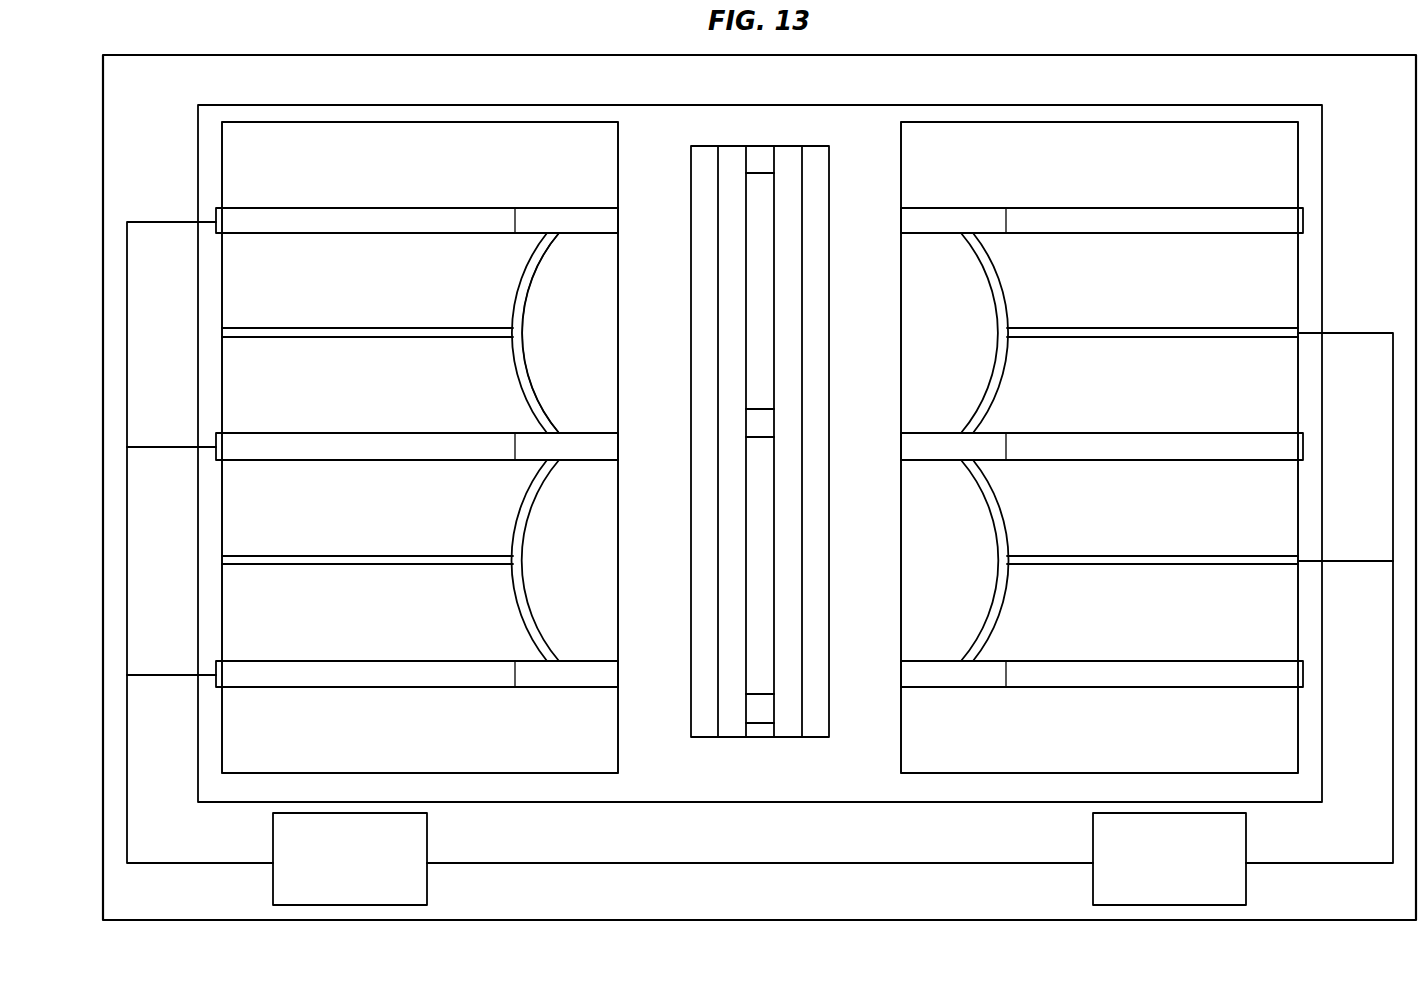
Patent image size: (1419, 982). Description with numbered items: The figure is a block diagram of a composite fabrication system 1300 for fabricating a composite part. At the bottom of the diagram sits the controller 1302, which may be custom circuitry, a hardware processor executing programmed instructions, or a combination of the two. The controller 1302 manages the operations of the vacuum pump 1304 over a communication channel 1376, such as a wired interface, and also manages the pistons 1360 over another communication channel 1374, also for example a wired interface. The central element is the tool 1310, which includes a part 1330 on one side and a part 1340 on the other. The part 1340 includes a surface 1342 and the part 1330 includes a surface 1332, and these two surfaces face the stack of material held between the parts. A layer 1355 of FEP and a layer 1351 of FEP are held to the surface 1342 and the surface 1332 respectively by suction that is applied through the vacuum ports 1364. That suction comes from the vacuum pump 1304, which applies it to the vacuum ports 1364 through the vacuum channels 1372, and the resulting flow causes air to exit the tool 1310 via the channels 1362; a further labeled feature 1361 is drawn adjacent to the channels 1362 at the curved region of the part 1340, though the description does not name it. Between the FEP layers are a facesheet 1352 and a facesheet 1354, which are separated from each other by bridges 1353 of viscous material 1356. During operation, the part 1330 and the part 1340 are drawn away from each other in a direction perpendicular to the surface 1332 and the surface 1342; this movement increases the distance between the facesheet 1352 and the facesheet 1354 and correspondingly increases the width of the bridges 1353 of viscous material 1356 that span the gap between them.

The composite fabrication system 1300 is at (759, 487).
The controller 1302 is at (350, 859).
The vacuum pump 1304 is at (1169, 859).
The tool 1310 is at (760, 471).
The part 1330 is at (1099, 447).
The surface 1332 is at (905, 157).
The part 1340 is at (420, 447).
The surface 1342 is at (617, 173).
The layer of FEP 1351 is at (705, 146).
The facesheet 1352 is at (735, 146).
The bridges 1353 is at (762, 160).
The facesheet 1354 is at (787, 146).
The layer of FEP 1355 is at (818, 146).
The viscous material 1356 is at (760, 425).
The pistons 1360 is at (310, 208).
The curved surface 1361 is at (527, 238).
The channels 1362 is at (527, 362).
The vacuum ports 1364 is at (1210, 333).
The vacuum channels 1372 is at (1382, 333).
The communication channel 1374 is at (150, 222).
The communication channel 1376 is at (584, 863).